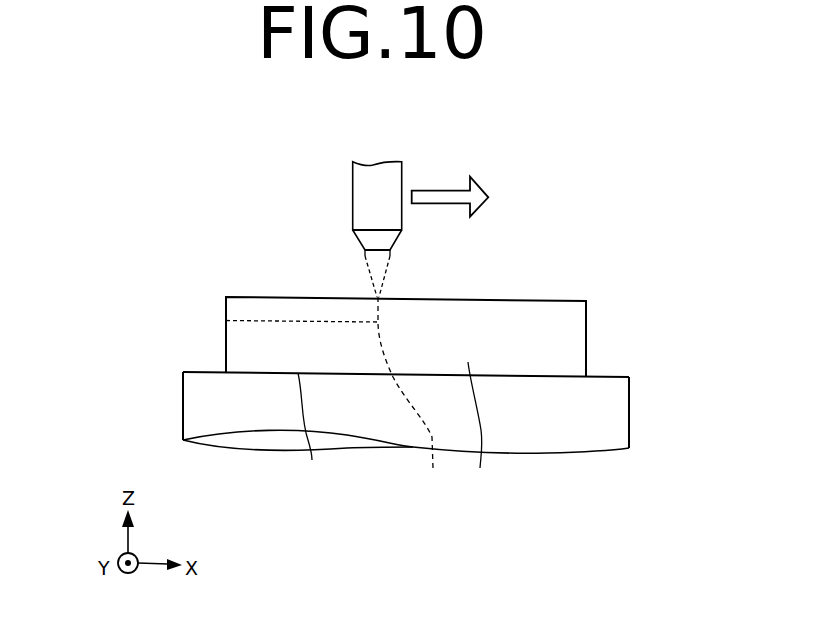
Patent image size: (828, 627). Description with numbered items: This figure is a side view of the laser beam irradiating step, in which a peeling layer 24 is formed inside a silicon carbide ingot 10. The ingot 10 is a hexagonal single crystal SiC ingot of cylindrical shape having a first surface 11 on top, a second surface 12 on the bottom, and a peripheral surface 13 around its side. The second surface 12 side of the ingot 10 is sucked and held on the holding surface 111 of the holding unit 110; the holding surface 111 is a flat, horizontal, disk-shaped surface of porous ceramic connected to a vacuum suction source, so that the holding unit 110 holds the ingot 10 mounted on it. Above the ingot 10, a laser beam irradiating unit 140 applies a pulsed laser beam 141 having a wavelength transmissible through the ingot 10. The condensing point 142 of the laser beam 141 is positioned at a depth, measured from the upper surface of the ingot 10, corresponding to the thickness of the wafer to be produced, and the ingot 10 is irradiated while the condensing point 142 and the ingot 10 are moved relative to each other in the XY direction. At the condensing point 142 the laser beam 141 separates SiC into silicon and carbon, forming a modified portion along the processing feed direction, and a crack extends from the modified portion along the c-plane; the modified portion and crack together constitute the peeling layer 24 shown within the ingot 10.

The ingot 10 is at (383, 366).
The first surface 11 is at (378, 308).
The second surface 12 is at (310, 433).
The peripheral surface 13 is at (480, 429).
The peeling layer 24 is at (253, 320).
The holding unit 110 is at (375, 414).
The holding surface 111 is at (190, 372).
The laser beam irradiating unit 140 is at (416, 160).
The laser beam 141 is at (380, 263).
The condensing point 142 is at (415, 396).